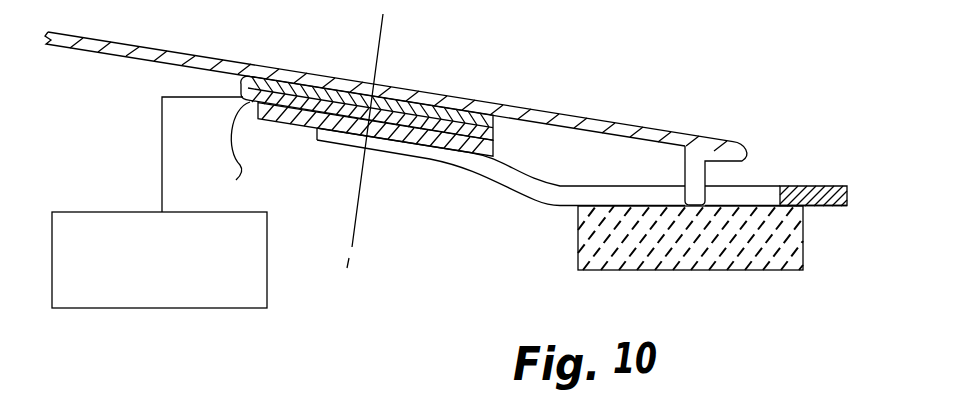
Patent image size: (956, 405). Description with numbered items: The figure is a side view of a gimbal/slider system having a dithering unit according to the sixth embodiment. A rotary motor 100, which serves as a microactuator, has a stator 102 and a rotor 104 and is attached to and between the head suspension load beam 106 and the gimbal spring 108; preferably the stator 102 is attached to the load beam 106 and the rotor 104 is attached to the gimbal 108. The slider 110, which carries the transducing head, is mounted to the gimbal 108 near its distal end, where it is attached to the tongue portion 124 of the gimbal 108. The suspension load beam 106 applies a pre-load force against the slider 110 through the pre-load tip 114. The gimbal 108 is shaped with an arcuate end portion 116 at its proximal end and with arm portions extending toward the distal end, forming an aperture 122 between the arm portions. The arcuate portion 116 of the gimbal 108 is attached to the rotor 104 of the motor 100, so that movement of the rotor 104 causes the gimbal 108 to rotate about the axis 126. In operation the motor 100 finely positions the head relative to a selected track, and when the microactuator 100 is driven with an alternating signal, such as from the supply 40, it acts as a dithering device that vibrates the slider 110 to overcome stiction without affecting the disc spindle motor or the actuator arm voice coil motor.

The supply 40 is at (78, 308).
The rotary motor 100 is at (446, 137).
The stator 102 is at (244, 74).
The rotor 104 is at (206, 154).
The head suspension load beam 106 is at (147, 47).
The gimbal spring 108 is at (510, 190).
The slider 110 is at (803, 252).
The pre-load tip 114 is at (707, 172).
The arcuate end portion 116 is at (270, 120).
The aperture 122 is at (563, 193).
The tongue portion 124 is at (827, 192).
The axis 126 is at (352, 247).